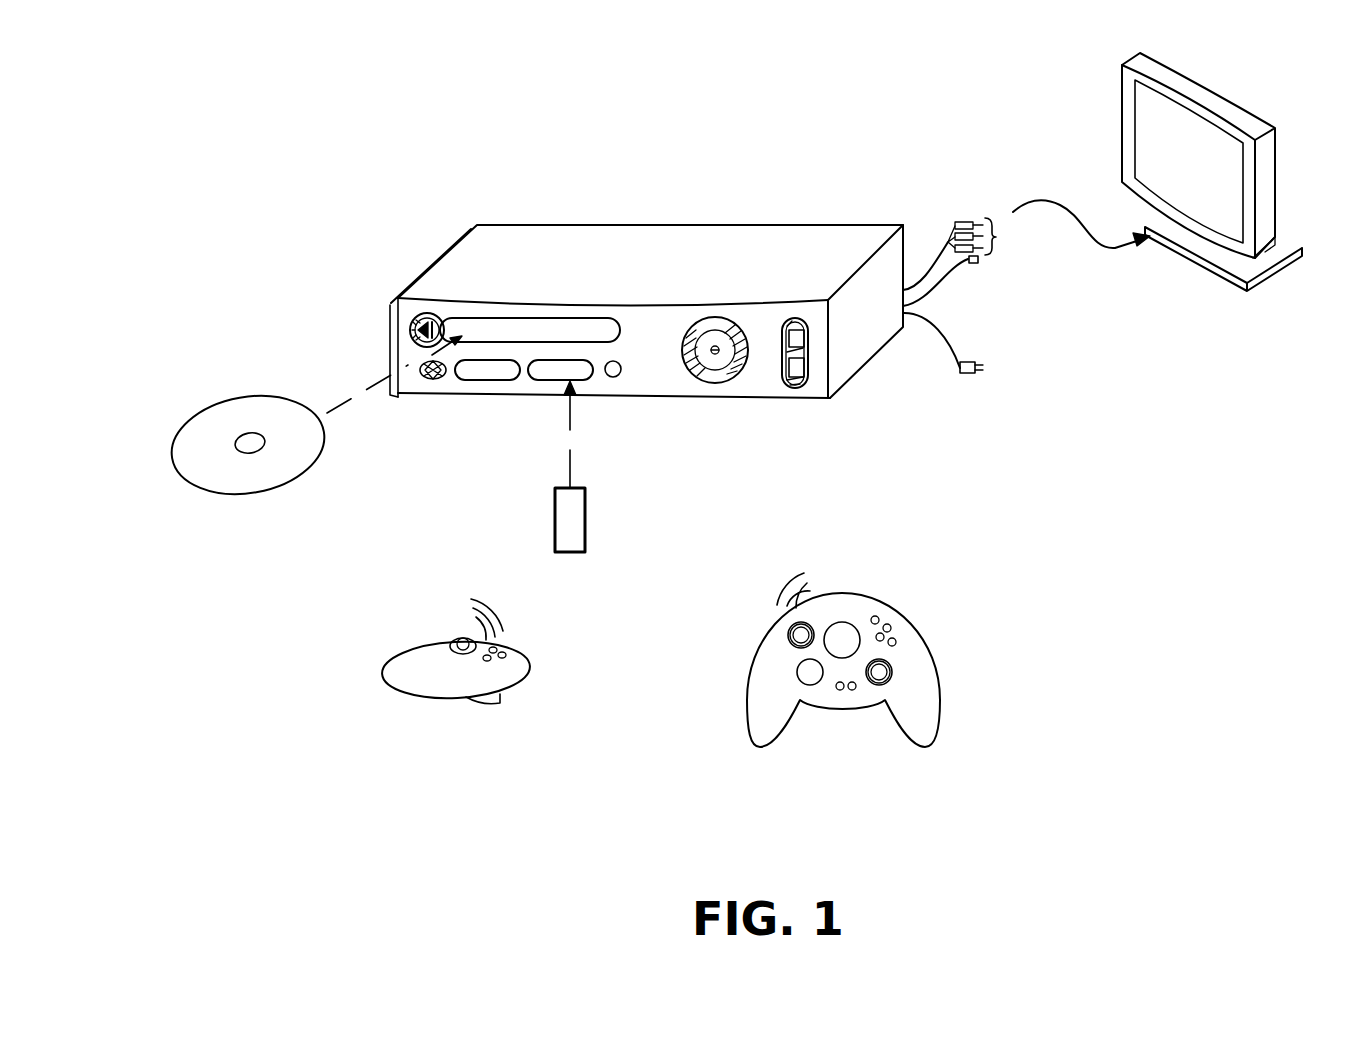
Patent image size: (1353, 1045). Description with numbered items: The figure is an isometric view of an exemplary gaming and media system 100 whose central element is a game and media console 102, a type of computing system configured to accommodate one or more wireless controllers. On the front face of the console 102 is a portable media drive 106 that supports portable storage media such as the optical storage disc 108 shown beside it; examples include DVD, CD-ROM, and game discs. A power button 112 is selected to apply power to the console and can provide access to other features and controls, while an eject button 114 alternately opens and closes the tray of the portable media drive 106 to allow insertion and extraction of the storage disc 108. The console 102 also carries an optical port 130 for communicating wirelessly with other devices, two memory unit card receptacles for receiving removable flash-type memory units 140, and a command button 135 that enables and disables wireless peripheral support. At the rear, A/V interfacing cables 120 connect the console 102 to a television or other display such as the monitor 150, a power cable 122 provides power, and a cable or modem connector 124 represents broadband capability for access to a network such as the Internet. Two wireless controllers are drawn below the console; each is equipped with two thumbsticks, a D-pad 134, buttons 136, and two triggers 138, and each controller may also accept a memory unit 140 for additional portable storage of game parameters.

The gaming and media system 100 is at (675, 190).
The game and media console 102 is at (517, 235).
The portable media drive 106 is at (538, 318).
The optical storage disc 108 is at (260, 493).
The power button 112 is at (715, 383).
The eject button 114 is at (412, 325).
The A/V interfacing cables 120 is at (967, 222).
The power cable 122 is at (962, 377).
The cable or modem connector 124 is at (975, 262).
The optical port 130 is at (430, 382).
The D-pad 134 is at (798, 672).
The command button 135 is at (613, 378).
The buttons 136 is at (888, 628).
The triggers 138 is at (498, 713).
The memory unit 140 is at (570, 552).
The monitor 150 is at (1122, 125).